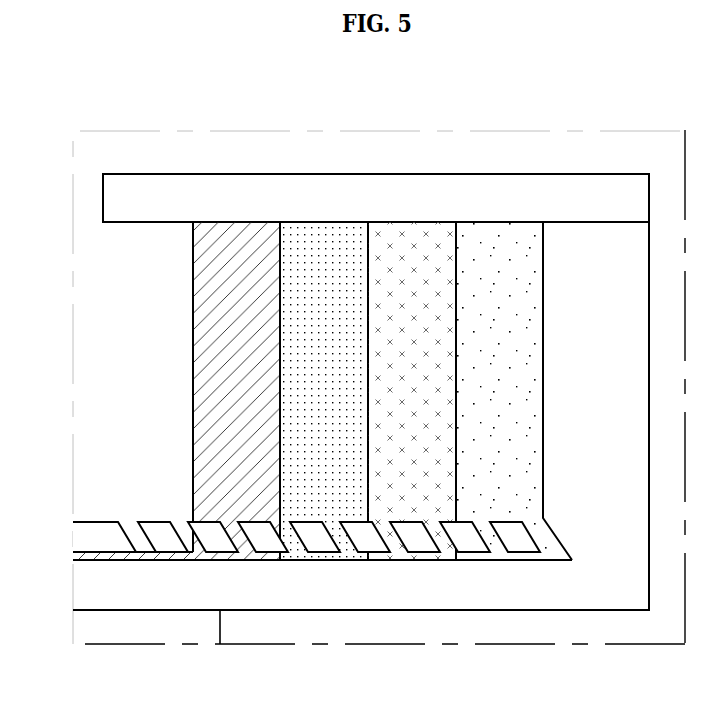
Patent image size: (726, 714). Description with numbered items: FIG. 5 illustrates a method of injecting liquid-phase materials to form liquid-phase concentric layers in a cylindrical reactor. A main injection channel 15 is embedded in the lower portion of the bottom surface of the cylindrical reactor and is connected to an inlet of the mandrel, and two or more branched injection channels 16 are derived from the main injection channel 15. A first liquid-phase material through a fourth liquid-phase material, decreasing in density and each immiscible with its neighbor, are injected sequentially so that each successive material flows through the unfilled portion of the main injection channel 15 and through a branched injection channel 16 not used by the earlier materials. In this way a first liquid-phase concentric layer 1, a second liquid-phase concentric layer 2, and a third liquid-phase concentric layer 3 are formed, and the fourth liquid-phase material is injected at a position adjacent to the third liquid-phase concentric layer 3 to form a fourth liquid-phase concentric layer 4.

The first liquid-phase concentric layer 1 is at (514, 391).
The second liquid-phase concentric layer 2 is at (412, 391).
The third liquid-phase concentric layer 3 is at (324, 391).
The fourth liquid-phase concentric layer 4 is at (236, 391).
The main injection channel 15 is at (149, 568).
The branched injection channels 16 is at (220, 499).